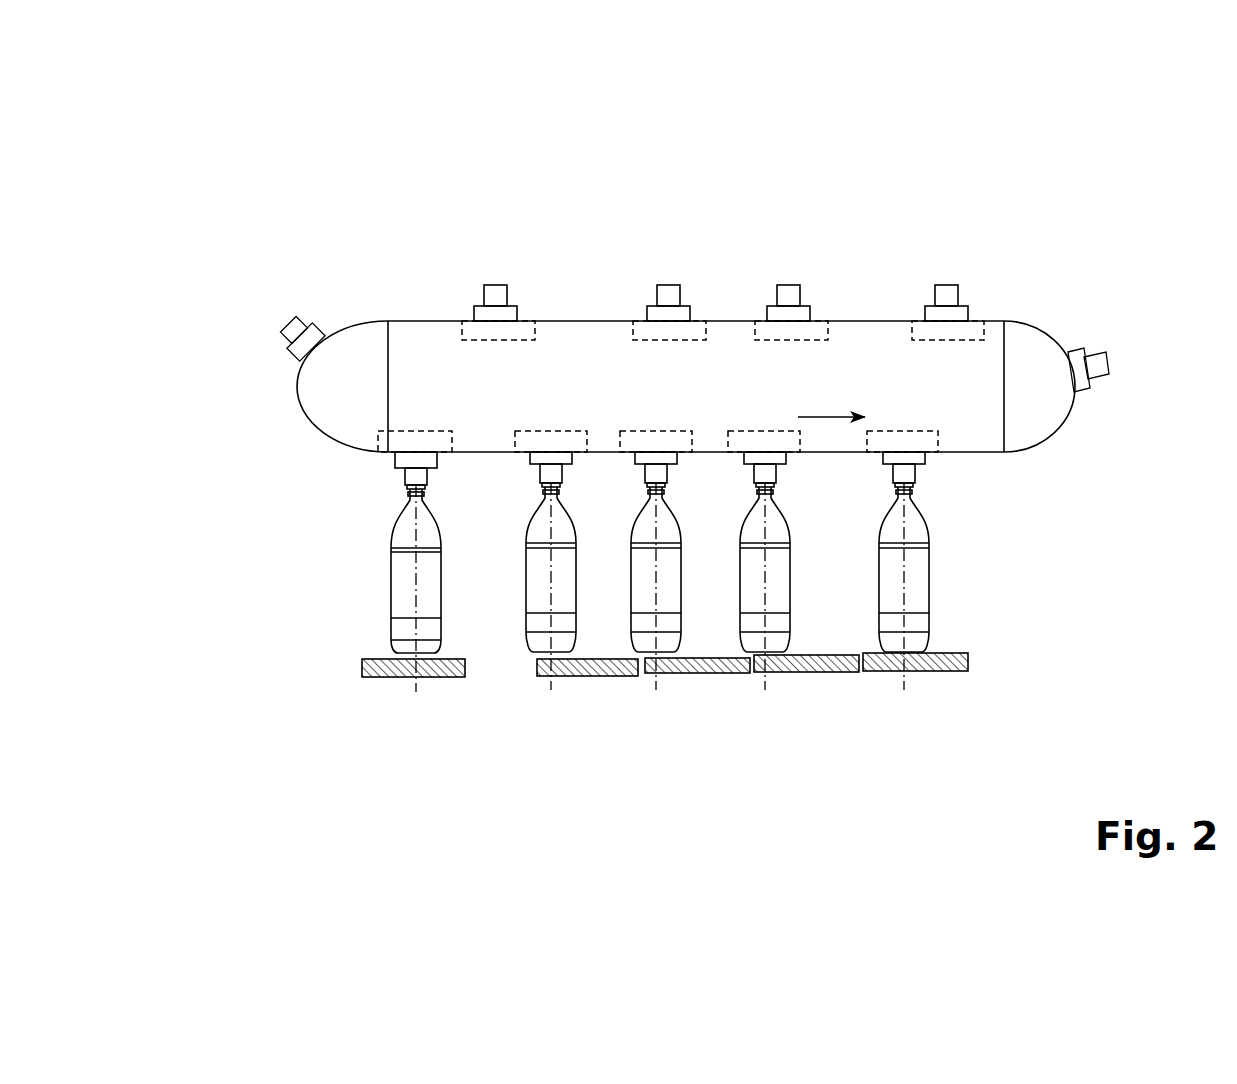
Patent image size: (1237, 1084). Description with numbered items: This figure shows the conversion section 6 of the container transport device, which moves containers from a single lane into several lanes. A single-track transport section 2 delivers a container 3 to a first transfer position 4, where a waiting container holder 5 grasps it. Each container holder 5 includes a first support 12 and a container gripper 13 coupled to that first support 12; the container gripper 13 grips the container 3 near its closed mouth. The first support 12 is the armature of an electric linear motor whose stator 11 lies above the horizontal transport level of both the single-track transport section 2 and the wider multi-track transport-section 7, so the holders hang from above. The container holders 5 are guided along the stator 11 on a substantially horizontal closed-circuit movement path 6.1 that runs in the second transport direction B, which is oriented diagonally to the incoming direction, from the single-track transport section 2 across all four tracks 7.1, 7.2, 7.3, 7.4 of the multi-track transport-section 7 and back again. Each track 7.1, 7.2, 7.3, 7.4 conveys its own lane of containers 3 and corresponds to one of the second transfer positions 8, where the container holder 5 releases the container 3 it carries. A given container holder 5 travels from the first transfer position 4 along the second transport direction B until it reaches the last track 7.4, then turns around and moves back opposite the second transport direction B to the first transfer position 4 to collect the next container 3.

The single-track transport section 2 is at (392, 673).
The container 3 is at (402, 574).
The first transfer position 4 is at (352, 549).
The container holder 5 is at (952, 307).
The conversion section 6 is at (1076, 238).
The closed-circuit movement path 6.1 is at (425, 320).
The multi-track transport-section 7 is at (1000, 683).
The track 7.1 is at (595, 672).
The track 7.2 is at (698, 672).
The track 7.3 is at (785, 668).
The track 7.4 is at (918, 668).
The second transfer position 8 is at (973, 564).
The stator 11 is at (1035, 392).
The first support 12 is at (425, 438).
The container gripper 13 is at (540, 477).
The second transport direction B is at (831, 400).